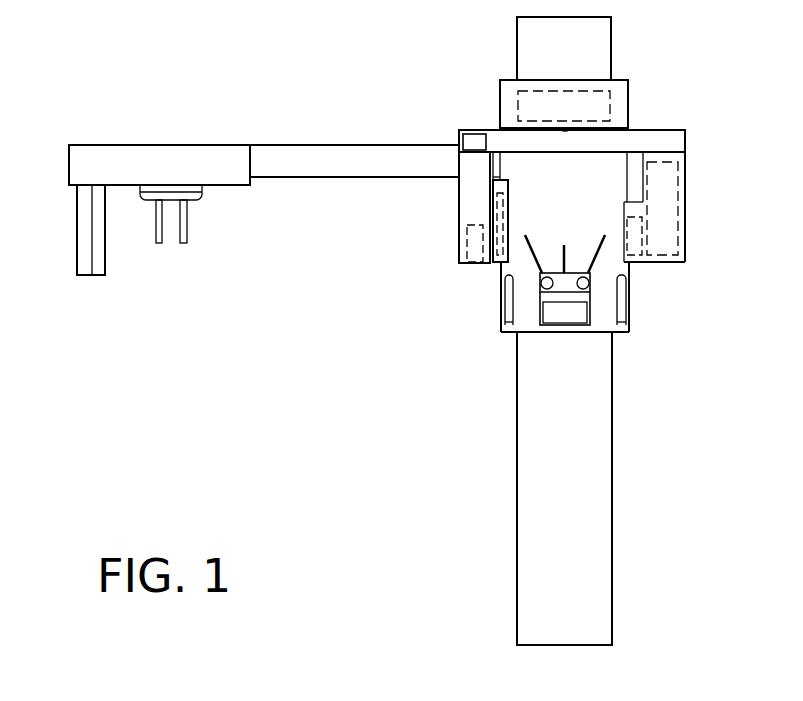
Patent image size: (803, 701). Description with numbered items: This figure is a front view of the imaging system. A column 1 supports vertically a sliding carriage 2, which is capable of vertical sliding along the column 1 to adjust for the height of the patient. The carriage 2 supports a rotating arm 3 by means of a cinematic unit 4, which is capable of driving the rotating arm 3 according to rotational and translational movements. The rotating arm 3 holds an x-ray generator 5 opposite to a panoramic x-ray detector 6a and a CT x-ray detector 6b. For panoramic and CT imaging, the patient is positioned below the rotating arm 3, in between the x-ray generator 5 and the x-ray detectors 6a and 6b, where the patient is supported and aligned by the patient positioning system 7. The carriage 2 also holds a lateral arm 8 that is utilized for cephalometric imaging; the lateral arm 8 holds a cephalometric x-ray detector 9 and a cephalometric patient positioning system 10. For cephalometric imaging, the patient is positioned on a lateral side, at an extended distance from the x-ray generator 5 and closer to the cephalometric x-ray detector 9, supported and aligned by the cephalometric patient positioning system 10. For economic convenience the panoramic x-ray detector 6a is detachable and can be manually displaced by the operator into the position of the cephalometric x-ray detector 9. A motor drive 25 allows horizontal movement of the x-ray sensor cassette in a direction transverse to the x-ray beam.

The column 1 is at (518, 507).
The sliding carriage 2 is at (595, 290).
The rotating arm 3 is at (657, 130).
The cinematic unit 4 is at (600, 107).
The x-ray generator 5 is at (663, 235).
The panoramic x-ray detector 6a is at (497, 265).
The CT x-ray detector 6b is at (478, 237).
The patient positioning system 7 is at (563, 293).
The lateral arm 8 is at (328, 145).
The cephalometric x-ray detector 9 is at (83, 217).
The cephalometric patient positioning system 10 is at (195, 197).
The motor drive 25 is at (463, 135).